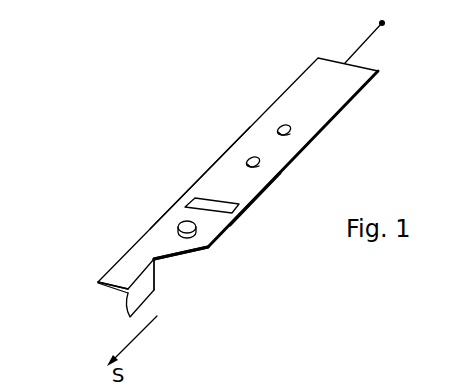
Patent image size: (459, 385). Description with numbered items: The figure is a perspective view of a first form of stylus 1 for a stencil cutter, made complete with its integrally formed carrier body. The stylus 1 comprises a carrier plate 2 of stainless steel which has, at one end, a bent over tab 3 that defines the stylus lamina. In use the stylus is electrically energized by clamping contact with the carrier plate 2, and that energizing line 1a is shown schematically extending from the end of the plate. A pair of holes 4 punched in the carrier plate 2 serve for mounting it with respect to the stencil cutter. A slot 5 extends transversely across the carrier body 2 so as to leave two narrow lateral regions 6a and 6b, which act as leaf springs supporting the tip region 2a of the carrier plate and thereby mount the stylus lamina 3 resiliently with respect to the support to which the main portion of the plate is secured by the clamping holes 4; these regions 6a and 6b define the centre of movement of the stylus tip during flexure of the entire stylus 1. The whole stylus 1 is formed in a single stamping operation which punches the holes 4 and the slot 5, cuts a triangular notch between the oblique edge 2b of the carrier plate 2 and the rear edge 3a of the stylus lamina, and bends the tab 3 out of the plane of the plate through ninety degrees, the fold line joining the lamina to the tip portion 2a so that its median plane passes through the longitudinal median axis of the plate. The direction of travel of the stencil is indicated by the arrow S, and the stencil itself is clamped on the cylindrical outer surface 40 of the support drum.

The stylus 1 is at (222, 209).
The energizing line 1a is at (362, 44).
The carrier plate 2 is at (263, 132).
The tip region of the carrier plate 2a is at (132, 261).
The oblique edge of the carrier plate 2b is at (190, 257).
The bent over tab (stylus lamina) 3 is at (145, 293).
The rear edge of the stylus lamina 3a is at (155, 275).
The holes 4 is at (261, 163).
The slot 5 is at (194, 198).
The narrow lateral region 6a is at (184, 201).
The narrow lateral region 6b is at (247, 208).
The cylindrical outer surface of the stencil support drum 40 is at (63, 370).